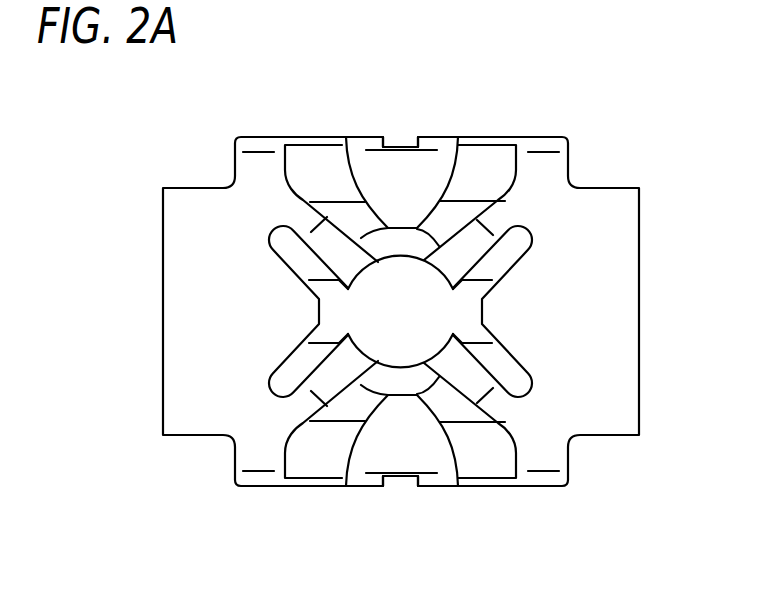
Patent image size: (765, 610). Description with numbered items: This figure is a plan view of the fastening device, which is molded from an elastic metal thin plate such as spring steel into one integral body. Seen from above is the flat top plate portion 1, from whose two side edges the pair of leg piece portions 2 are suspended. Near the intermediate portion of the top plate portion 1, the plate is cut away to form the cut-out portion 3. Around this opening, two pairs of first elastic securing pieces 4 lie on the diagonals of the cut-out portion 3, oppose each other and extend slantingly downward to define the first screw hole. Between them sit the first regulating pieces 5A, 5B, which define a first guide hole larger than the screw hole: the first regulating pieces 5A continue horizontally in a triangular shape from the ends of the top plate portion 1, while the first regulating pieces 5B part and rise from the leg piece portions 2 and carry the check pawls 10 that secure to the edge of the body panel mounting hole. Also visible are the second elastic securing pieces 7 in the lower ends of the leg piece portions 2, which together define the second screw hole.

The top plate portion 1 is at (612, 223).
The leg piece portions 2 is at (542, 106).
The cut-out portion 3 is at (352, 312).
The first elastic securing pieces 4 is at (337, 249).
The first regulating pieces 5A is at (313, 305).
The first regulating pieces 5B is at (398, 222).
The second elastic securing pieces 7 is at (400, 256).
The check pawls 10 is at (398, 137).